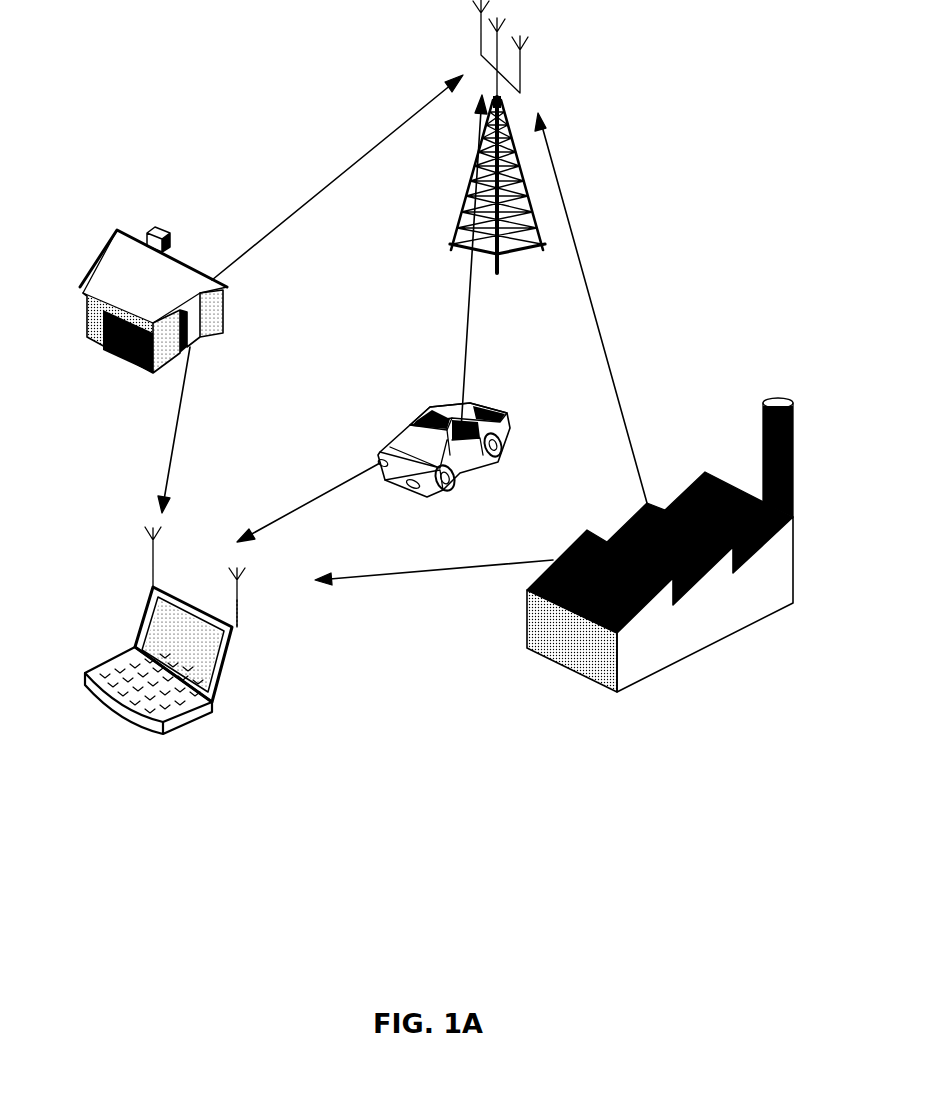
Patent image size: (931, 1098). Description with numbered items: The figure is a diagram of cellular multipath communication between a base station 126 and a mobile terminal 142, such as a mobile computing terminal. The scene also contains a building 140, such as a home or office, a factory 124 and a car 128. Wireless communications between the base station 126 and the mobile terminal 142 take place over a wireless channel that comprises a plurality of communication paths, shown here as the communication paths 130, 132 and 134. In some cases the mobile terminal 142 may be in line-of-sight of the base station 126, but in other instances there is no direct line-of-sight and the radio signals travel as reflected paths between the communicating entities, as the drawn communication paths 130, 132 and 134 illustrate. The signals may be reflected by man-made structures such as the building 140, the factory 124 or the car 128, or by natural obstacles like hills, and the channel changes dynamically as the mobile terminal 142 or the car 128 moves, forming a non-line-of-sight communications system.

The factory 124 is at (632, 683).
The base station 126 is at (498, 270).
The car 128 is at (447, 490).
The communication path 130 is at (280, 223).
The communication path 132 is at (467, 360).
The communication path 134 is at (603, 332).
The building 140 is at (118, 229).
The mobile terminal 142 is at (230, 652).